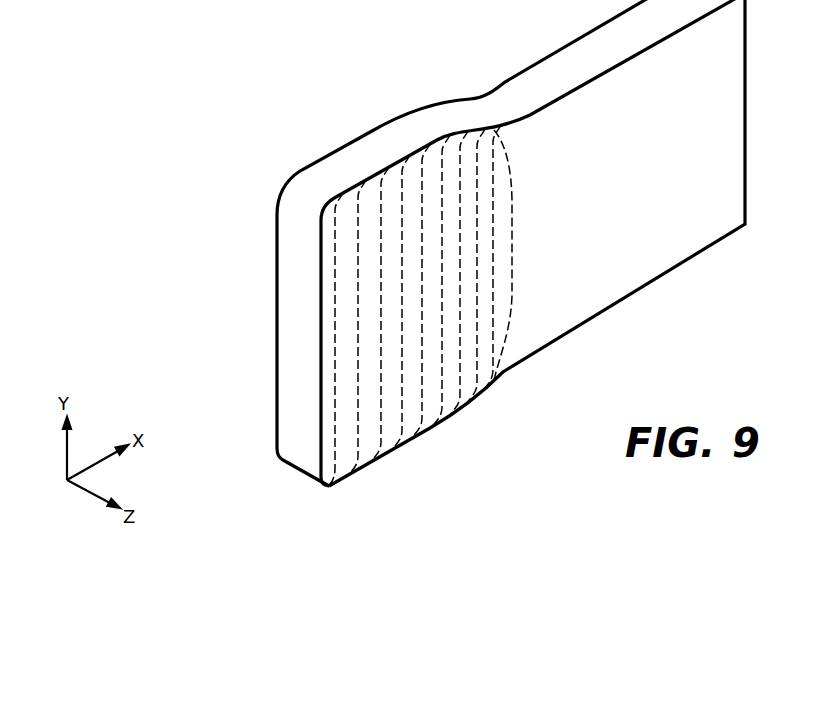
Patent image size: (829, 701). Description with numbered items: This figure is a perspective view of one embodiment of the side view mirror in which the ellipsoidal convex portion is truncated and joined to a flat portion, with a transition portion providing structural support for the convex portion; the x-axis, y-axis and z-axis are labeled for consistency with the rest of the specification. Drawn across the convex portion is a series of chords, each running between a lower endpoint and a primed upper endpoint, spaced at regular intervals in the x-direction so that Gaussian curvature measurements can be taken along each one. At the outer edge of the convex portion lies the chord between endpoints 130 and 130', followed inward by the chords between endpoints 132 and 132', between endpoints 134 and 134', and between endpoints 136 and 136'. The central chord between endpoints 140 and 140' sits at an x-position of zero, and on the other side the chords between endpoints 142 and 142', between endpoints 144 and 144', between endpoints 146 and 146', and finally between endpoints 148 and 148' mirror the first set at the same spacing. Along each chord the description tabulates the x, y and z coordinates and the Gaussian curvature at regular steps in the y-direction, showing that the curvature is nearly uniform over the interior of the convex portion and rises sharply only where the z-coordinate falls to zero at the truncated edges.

The chord endpoint 130 is at (463, 267).
The chord endpoint 130' is at (463, 243).
The chord endpoint 132 is at (284, 349).
The chord endpoint 132' is at (284, 316).
The chord endpoint 134 is at (324, 325).
The chord endpoint 134' is at (320, 292).
The chord endpoint 136 is at (368, 305).
The chord endpoint 136' is at (352, 266).
The chord endpoint 140 is at (416, 282).
The chord endpoint 140' is at (391, 248).
The chord endpoint 142 is at (459, 263).
The chord endpoint 142' is at (424, 235).
The chord endpoint 144 is at (498, 239).
The chord endpoint 144' is at (464, 218).
The chord endpoint 146 is at (517, 231).
The chord endpoint 146' is at (498, 221).
The chord endpoint 148 is at (531, 229).
The chord endpoint 148' is at (529, 229).